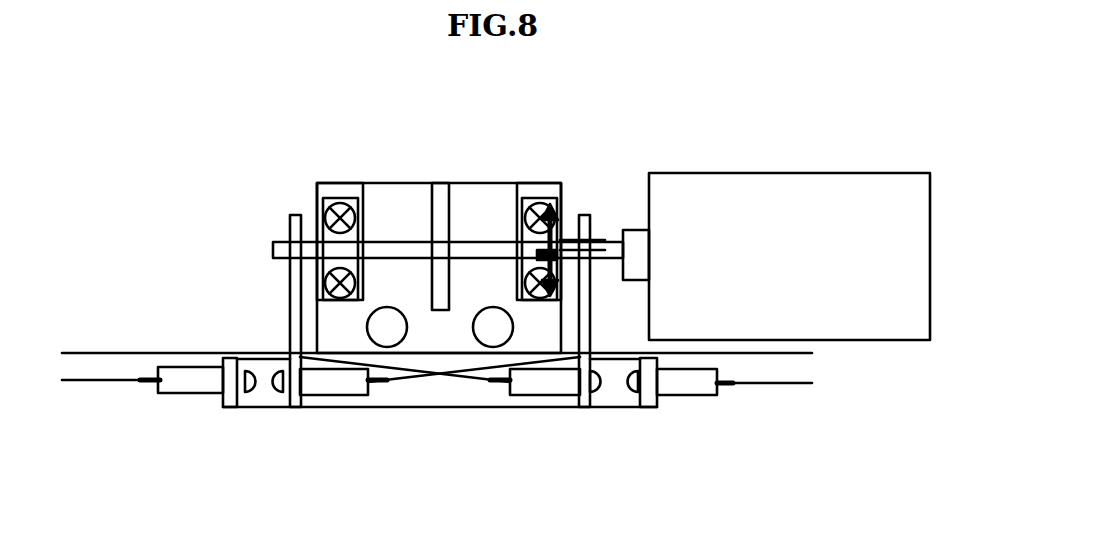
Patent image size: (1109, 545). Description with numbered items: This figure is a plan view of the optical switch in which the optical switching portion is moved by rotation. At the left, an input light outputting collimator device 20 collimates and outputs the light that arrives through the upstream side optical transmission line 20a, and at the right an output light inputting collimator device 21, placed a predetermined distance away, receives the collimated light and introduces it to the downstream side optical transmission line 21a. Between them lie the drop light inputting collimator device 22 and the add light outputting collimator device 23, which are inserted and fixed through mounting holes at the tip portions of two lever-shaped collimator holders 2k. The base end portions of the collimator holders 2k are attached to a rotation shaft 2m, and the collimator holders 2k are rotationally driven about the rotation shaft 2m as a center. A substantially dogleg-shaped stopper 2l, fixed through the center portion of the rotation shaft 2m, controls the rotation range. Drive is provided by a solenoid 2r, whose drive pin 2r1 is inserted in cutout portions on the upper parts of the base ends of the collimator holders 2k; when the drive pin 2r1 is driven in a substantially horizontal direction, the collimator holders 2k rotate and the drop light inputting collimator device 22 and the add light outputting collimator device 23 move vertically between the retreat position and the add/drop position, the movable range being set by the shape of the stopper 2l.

The stopper 2l is at (432, 215).
The rotation shaft 2m is at (483, 232).
The collimator holder 2k is at (289, 298).
The solenoid 2r is at (817, 173).
The drive pin 2r1 is at (598, 263).
The input light outputting collimator device 20 is at (193, 395).
The upstream side optical transmission line 20a is at (83, 382).
The output light inputting collimator device 21 is at (693, 397).
The downstream side optical transmission line 21a is at (787, 387).
The drop light inputting collimator device 22 is at (337, 387).
The add light outputting collimator device 23 is at (543, 389).